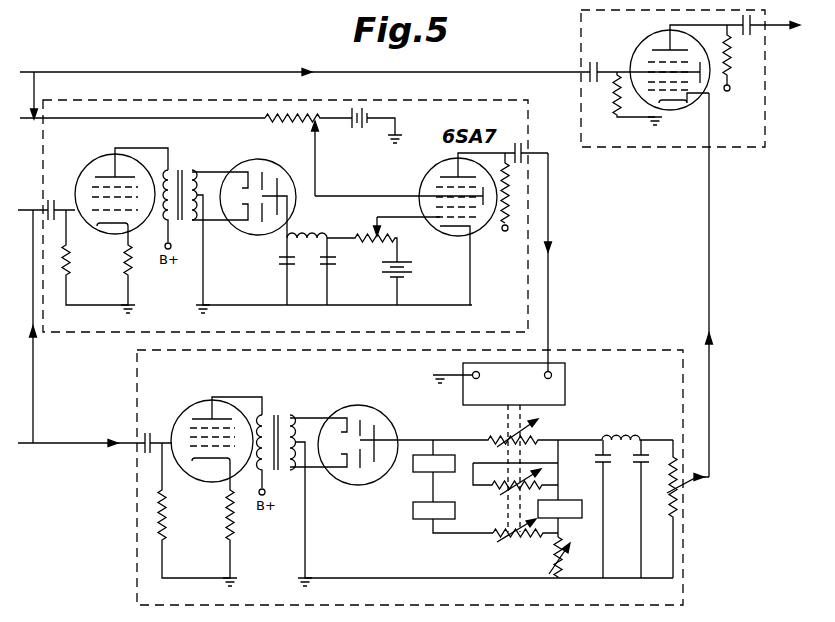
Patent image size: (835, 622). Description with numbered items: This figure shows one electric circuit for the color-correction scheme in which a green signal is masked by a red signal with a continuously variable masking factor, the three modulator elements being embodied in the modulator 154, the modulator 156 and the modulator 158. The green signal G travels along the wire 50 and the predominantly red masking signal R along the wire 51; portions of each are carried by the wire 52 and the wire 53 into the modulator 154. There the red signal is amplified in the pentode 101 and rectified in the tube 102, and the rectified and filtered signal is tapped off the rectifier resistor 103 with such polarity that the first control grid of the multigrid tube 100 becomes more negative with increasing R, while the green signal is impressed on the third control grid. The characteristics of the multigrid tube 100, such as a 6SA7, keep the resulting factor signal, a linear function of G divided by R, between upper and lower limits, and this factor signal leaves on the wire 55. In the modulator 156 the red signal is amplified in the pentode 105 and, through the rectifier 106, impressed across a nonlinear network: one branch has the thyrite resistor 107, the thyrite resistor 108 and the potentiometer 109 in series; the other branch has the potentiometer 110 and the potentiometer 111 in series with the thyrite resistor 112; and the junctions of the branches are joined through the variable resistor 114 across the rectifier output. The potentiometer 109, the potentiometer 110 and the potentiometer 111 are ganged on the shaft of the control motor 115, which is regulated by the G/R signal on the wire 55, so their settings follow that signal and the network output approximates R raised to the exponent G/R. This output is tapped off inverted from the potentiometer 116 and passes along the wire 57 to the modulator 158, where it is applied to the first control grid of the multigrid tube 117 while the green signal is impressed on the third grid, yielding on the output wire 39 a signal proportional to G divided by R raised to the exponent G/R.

The output wire 39 is at (773, 28).
The wire 50 is at (148, 72).
The wire 51 is at (58, 443).
The wire 52 is at (38, 84).
The wire 53 is at (33, 358).
The wire 55 is at (548, 270).
The wire 57 is at (708, 208).
The multigrid tube 100 is at (430, 170).
The pentode 101 is at (99, 160).
The tube 102 is at (250, 159).
The rectifier resistor 103 is at (372, 226).
The pentode 105 is at (198, 402).
The rectifier 106 is at (358, 405).
The thyrite resistor 107 is at (434, 456).
The thyrite resistor 108 is at (453, 502).
The potentiometer 109 is at (497, 537).
The potentiometer 110 is at (497, 430).
The potentiometer 111 is at (538, 485).
The thyrite resistor 112 is at (560, 518).
The variable resistor 114 is at (550, 557).
The control motor 115 is at (567, 377).
The potentiometer 116 is at (678, 492).
The multigrid tube 117 is at (648, 36).
The modulator 154 is at (530, 122).
The modulator 156 is at (578, 347).
The modulator 158 is at (683, 150).